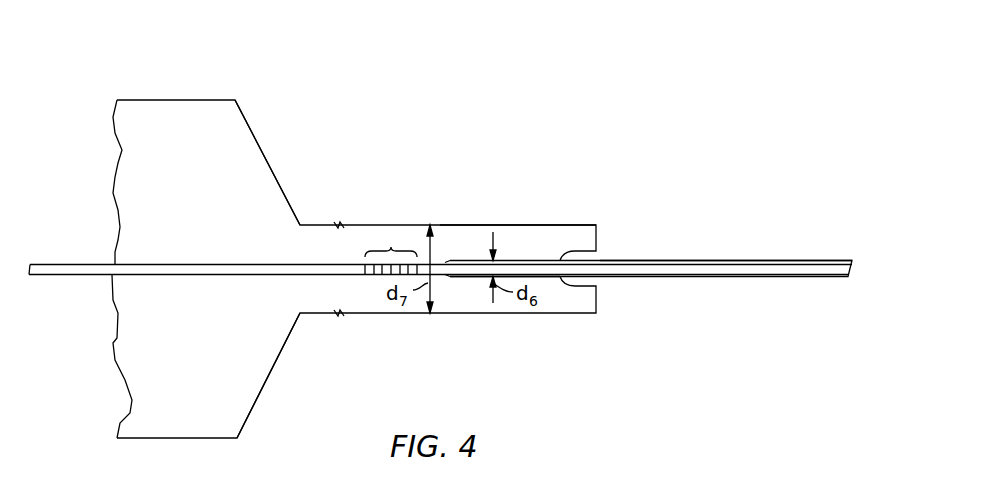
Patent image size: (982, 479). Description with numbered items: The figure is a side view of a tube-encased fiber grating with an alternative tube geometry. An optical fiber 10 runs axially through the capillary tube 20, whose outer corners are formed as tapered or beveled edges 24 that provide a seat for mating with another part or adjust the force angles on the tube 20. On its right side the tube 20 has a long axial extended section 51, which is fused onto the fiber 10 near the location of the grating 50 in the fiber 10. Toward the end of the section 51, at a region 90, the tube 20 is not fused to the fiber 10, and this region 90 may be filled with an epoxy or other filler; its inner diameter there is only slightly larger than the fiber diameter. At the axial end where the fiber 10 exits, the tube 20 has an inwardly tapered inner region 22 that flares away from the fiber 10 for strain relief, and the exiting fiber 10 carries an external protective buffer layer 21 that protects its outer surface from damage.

The tube 20 is at (133, 91).
The tapered outer corners 24 is at (260, 152).
The optical fiber 10 is at (160, 266).
The inner region 22 is at (567, 257).
The external protective buffer layer 21 is at (768, 262).
The grating 50 is at (391, 247).
The axial extended section 51 is at (463, 232).
The region 90 is at (475, 278).